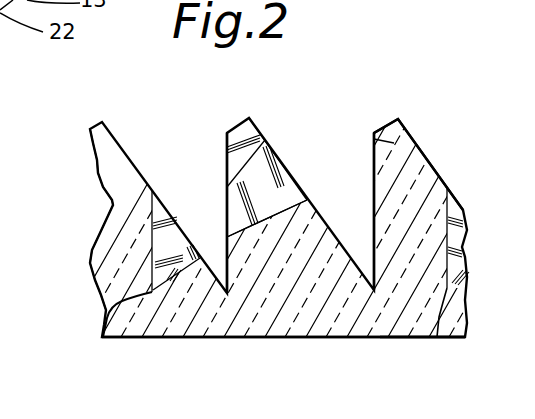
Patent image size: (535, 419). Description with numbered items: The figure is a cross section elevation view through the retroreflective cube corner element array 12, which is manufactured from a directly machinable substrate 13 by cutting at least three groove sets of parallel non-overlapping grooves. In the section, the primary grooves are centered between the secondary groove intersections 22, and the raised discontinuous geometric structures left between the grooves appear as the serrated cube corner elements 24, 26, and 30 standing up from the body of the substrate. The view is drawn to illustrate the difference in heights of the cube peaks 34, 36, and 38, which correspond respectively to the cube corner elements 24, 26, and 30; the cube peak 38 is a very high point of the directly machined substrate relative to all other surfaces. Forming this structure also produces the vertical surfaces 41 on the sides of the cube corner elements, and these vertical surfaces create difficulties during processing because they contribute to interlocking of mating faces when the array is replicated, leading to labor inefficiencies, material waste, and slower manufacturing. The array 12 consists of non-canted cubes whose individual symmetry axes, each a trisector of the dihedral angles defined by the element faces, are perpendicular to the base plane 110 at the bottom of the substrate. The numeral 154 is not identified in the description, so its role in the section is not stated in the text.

The retroreflective cube corner element array 12 is at (102, 308).
The directly machinable substrate 13 is at (315, 327).
The secondary groove intersections 22 is at (105, 312).
The cube corner element 24 is at (195, 270).
The cube corner element 26 is at (272, 235).
The cube corner element 30 is at (374, 139).
The cube peak 34 is at (195, 270).
The cube peak 36 is at (305, 202).
The cube peak 38 is at (397, 120).
The vertical surfaces 41 is at (226, 153).
The base plane 110 is at (162, 337).
The bottom surface 154 is at (422, 338).